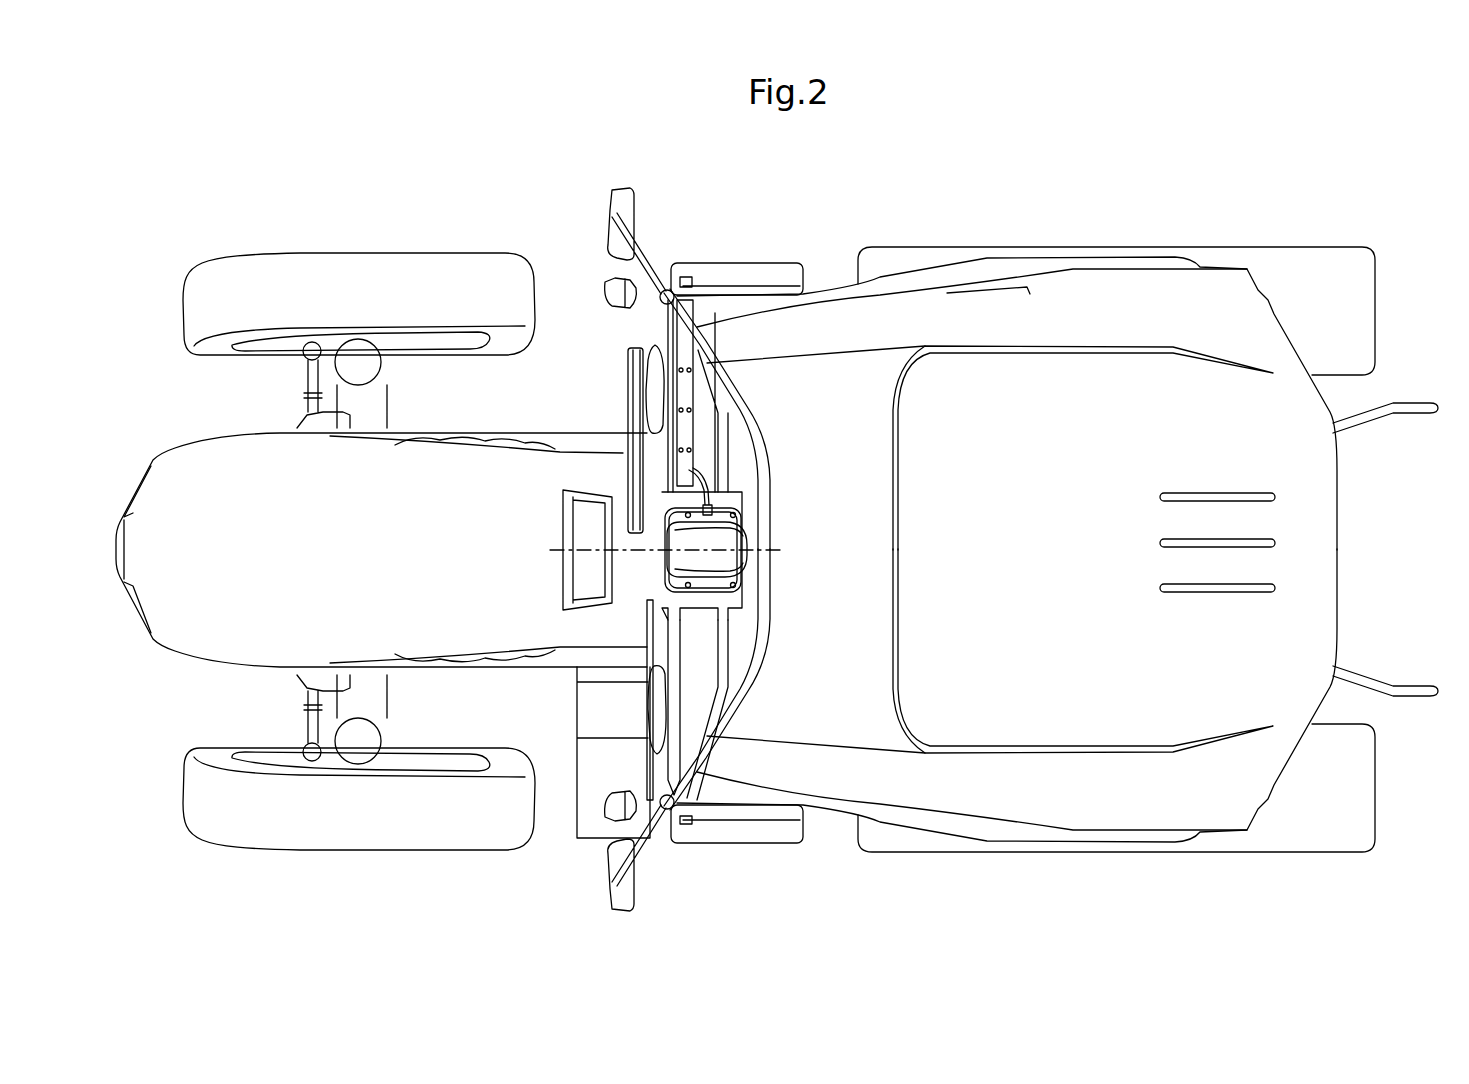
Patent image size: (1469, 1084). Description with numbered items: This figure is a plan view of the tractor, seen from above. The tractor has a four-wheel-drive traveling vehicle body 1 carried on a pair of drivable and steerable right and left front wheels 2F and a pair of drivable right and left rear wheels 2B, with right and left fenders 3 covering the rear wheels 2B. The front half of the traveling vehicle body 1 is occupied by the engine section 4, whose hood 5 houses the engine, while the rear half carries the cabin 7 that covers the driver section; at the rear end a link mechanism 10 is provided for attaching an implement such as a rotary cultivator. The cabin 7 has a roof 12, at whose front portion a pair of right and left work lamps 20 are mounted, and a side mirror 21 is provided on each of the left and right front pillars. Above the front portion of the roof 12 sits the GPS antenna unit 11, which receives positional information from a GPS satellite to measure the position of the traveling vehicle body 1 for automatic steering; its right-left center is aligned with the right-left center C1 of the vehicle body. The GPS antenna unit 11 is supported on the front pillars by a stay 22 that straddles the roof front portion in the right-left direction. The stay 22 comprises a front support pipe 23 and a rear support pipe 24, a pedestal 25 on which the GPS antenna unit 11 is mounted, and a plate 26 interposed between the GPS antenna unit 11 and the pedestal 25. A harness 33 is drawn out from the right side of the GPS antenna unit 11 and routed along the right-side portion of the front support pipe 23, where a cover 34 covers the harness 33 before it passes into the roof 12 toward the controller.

The traveling vehicle body 1 is at (158, 419).
The front wheels 2F is at (363, 262).
The rear wheels 2B is at (1305, 262).
The fenders 3 is at (990, 262).
The engine section 4 is at (557, 423).
The hood 5 is at (240, 632).
The cabin 7 is at (733, 802).
The link mechanism 10 is at (1440, 394).
The GPS antenna unit 11 is at (735, 538).
The roof 12 is at (883, 318).
The work lamps 20 is at (655, 378).
The side mirror 21 is at (600, 206).
The stay 22 is at (752, 430).
The front support pipe 23 is at (676, 628).
The rear support pipe 24 is at (727, 648).
The pedestal 25 is at (740, 500).
The plate 26 is at (720, 586).
The harness 33 is at (700, 482).
The cover 34 is at (688, 395).
The right-left center of the vehicle body C1 is at (646, 553).